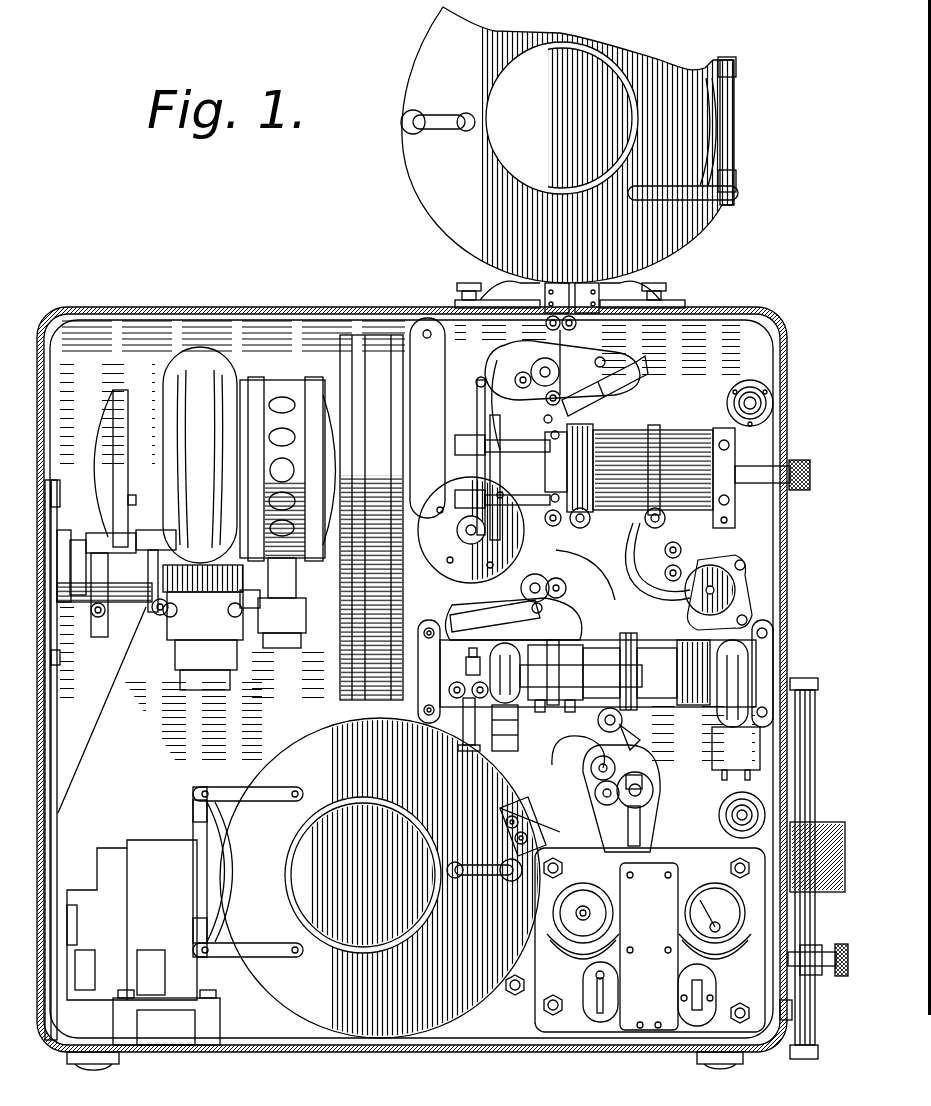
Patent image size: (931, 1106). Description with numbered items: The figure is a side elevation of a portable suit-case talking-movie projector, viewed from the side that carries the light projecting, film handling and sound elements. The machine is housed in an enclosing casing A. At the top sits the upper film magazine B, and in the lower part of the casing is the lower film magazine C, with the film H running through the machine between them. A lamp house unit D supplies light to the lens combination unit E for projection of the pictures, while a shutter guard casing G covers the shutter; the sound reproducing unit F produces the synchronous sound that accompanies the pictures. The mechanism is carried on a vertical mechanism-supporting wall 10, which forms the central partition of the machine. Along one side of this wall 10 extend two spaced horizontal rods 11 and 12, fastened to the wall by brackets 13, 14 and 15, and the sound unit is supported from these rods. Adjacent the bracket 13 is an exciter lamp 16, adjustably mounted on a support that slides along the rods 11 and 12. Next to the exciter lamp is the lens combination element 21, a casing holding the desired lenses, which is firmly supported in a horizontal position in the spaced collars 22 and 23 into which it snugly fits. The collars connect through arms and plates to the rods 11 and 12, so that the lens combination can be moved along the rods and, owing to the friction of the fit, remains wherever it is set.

The enclosing casing A is at (210, 325).
The upper film magazine B is at (432, 198).
The lower film magazine C is at (376, 878).
The lamp house unit D is at (250, 385).
The lens combination unit E is at (634, 518).
The sound reproducing unit F is at (568, 640).
The shutter guard casing G is at (352, 348).
The film H is at (497, 360).
The vertical mechanism-supporting wall 10 is at (762, 530).
The rod 11 is at (660, 650).
The rod 12 is at (690, 706).
The bracket 13 is at (440, 675).
The bracket 14 is at (770, 633).
The bracket 15 is at (628, 640).
The exciter lamp 16 is at (490, 650).
The lens combination element 21 is at (598, 622).
The collar 22 is at (540, 712).
The collar 23 is at (598, 718).